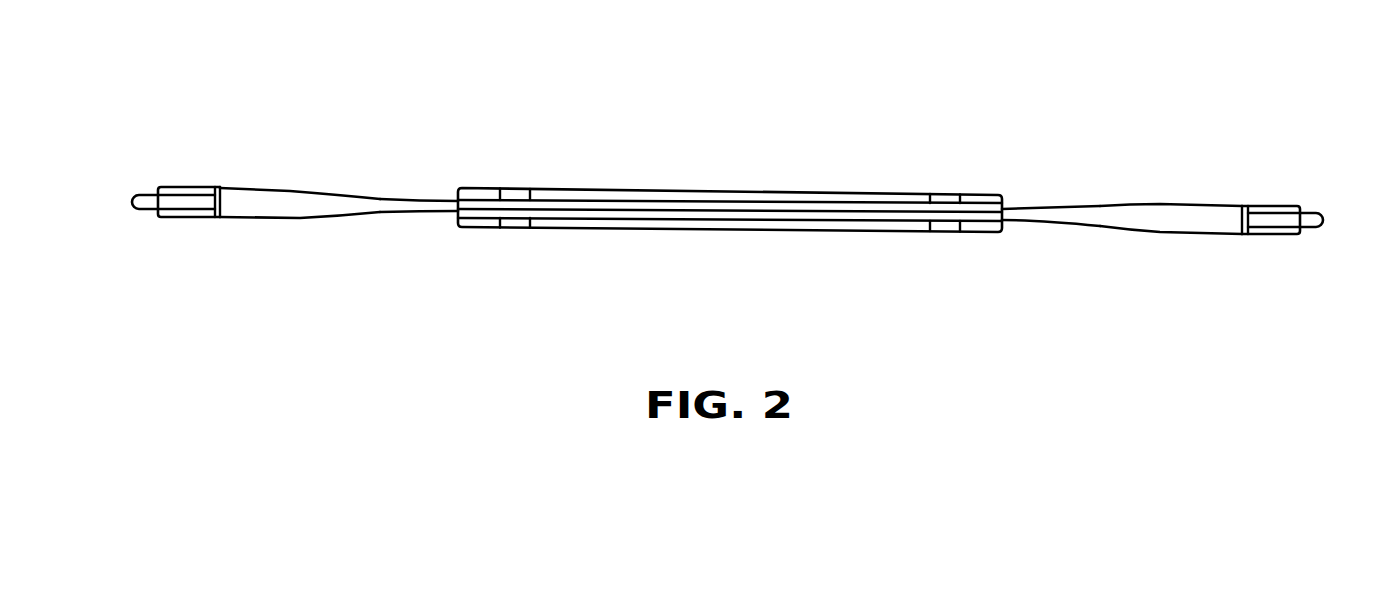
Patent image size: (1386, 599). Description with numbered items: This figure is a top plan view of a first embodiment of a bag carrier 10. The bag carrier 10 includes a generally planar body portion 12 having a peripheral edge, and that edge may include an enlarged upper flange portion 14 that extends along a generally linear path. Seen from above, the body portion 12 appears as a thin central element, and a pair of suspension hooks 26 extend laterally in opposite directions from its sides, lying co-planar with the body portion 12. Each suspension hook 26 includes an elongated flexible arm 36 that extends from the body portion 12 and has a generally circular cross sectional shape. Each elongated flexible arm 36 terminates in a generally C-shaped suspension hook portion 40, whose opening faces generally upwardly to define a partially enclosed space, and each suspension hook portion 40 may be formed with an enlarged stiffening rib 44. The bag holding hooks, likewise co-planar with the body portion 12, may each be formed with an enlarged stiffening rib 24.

The bag carrier 10 is at (448, 88).
The body portion 12 is at (616, 180).
The upper flange portion 14 is at (805, 225).
The stiffening rib 24 is at (481, 225).
The suspension hook 26 is at (247, 246).
The elongated flexible arm 36 is at (410, 205).
The suspension hook portion 40 is at (150, 195).
The stiffening rib 44 is at (260, 200).